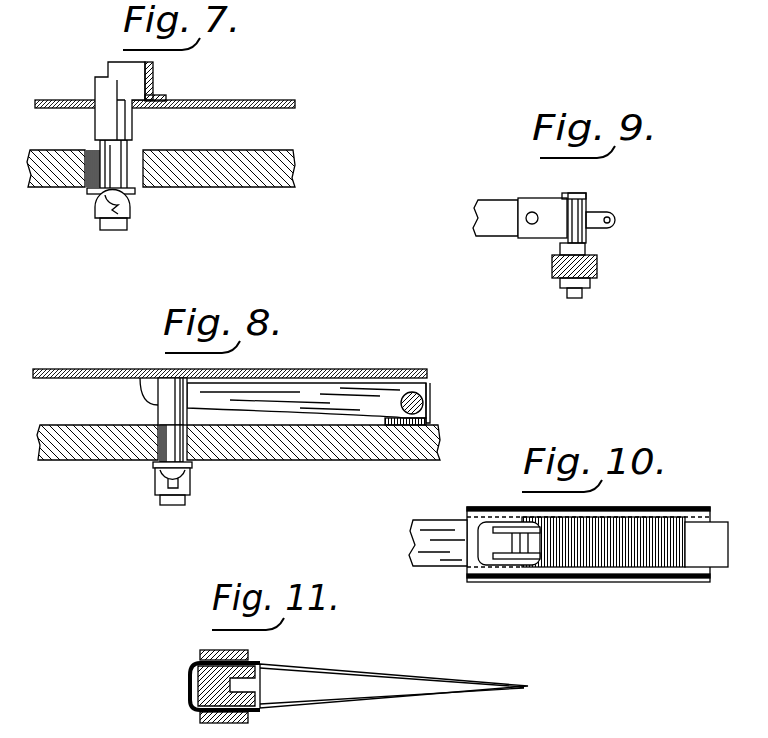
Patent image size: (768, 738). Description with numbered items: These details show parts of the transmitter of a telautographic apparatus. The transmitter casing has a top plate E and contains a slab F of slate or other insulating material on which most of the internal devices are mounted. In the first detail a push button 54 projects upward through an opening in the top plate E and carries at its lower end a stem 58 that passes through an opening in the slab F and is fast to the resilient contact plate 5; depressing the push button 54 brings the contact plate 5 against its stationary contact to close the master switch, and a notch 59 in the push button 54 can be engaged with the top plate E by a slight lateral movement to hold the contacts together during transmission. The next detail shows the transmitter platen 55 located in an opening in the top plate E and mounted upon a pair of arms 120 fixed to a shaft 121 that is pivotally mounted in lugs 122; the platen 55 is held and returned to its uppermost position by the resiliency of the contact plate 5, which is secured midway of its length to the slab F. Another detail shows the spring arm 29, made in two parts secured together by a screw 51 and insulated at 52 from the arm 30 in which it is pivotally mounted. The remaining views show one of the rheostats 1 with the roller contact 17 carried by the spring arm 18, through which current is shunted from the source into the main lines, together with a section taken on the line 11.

In FIG. 7, the push button 54 is at (95, 86).
In FIG. 7, the notch 59 is at (127, 97).
In FIG. 7, the stem 58 is at (126, 160).
In FIG. 7, the contact plate 5 is at (135, 192).
In FIG. 8, the contact plate 5 is at (190, 466).
In FIG. 7, the top plate E is at (165, 93).
In FIG. 8, the top plate E is at (230, 363).
In FIG. 7, the slab F is at (161, 182).
In FIG. 8, the slab F is at (238, 458).
In FIG. 8, the transmitter platen 55 is at (156, 378).
In FIG. 8, the arms 120 is at (350, 402).
In FIG. 8, the shaft 121 is at (428, 394).
In FIG. 8, the lugs 122 is at (430, 421).
In FIG. 9, the spring arm 29 is at (495, 218).
In FIG. 9, the screw 51 is at (532, 212).
In FIG. 9, the insulation 52 is at (554, 278).
In FIG. 9, the arm 30 is at (592, 281).
In FIG. 10, the spring arm 18 is at (412, 547).
In FIG. 10, the roller contact 17 is at (509, 543).
In FIG. 10, the section line 11 is at (660, 520).
In FIG. 10, the rheostat 1 is at (608, 570).
In FIG. 11, the rheostat 1 is at (359, 686).